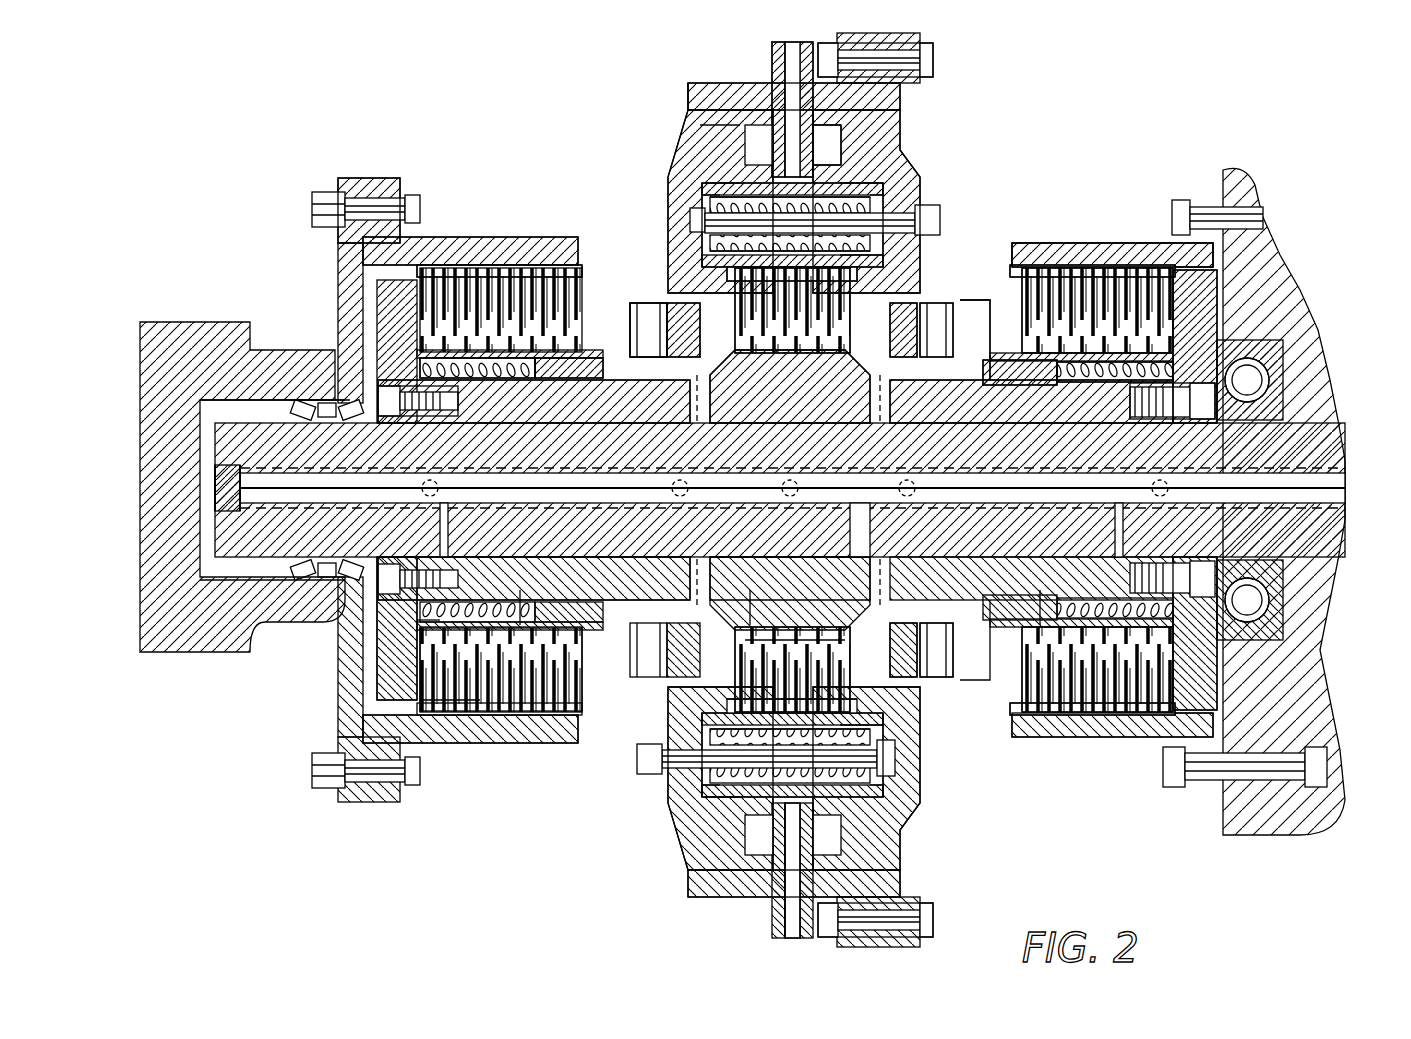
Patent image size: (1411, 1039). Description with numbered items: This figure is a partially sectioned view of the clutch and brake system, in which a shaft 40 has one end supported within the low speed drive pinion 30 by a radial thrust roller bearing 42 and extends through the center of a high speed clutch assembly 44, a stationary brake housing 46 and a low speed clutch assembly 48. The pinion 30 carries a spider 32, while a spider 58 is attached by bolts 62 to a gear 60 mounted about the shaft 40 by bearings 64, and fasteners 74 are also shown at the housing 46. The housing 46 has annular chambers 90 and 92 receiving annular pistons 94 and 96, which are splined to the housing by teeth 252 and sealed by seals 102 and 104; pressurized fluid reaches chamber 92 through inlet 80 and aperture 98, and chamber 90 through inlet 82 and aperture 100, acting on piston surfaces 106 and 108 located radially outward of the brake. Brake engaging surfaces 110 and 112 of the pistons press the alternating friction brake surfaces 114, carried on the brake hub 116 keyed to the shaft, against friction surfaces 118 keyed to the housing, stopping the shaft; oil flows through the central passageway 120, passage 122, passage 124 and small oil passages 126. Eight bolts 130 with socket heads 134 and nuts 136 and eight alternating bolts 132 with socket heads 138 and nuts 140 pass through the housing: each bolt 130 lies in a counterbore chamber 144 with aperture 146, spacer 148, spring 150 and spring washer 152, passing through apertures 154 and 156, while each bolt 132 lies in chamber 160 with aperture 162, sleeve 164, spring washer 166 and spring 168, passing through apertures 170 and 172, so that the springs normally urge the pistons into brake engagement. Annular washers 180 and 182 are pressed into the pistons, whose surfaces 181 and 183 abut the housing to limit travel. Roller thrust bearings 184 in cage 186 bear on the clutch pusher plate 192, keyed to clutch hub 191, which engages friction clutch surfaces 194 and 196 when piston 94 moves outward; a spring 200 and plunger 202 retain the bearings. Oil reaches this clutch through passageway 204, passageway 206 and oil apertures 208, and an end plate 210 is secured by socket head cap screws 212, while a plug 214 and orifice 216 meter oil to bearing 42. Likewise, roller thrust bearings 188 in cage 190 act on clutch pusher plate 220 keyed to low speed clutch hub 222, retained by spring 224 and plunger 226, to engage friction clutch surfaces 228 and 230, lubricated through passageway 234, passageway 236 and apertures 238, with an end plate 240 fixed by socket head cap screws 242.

The low speed drive pinion 30 is at (235, 325).
The spider 32 is at (545, 240).
The shaft 40 is at (312, 460).
The radial thrust roller bearing 42 is at (322, 400).
The high speed clutch assembly 44 is at (488, 175).
The brake housing 46 is at (692, 95).
The low speed clutch assembly 48 is at (1108, 194).
The spider 58 is at (1105, 243).
The gear 60 is at (1310, 320).
The bolts 62 is at (1208, 212).
The bearings 64 is at (1270, 382).
The bolt 74 is at (905, 60).
The inlet 80 is at (772, 58).
The inlet 82 is at (772, 935).
The annular chamber 90 is at (712, 105).
The annular chamber 92 is at (815, 125).
The annular piston 94 is at (690, 150).
The annular piston 96 is at (895, 150).
The aperture 98 is at (785, 100).
The aperture 100 is at (768, 895).
The seal 102 is at (755, 100).
The seal 104 is at (860, 118).
The piston surface 106 is at (705, 130).
The piston surface 108 is at (880, 130).
The brake engaging surface 110 is at (745, 290).
The brake engaging surface 112 is at (848, 290).
The friction brake surfaces 114 is at (820, 650).
The brake hub 116 is at (818, 394).
The friction surfaces 118 is at (885, 740).
The passageway 120 is at (1345, 487).
The passage 122 is at (870, 530).
The passage 124 is at (838, 588).
The oil passages 126 is at (774, 588).
The bolts 130 is at (712, 207).
The bolts 132 is at (660, 760).
The socket head 134 is at (700, 223).
The nuts 136 is at (940, 218).
The socket head 138 is at (895, 762).
The nuts 140 is at (662, 762).
The circular chamber 144 is at (705, 186).
The aperture 146 is at (885, 188).
The spacer 148 is at (880, 245).
The spring 150 is at (890, 180).
The spring washer 152 is at (712, 243).
The aperture 154 is at (885, 200).
The aperture 156 is at (702, 200).
The chamber 160 is at (880, 785).
The aperture 162 is at (712, 775).
The sleeve 164 is at (705, 790).
The spring washer 166 is at (885, 750).
The spring 168 is at (708, 798).
The aperture 170 is at (885, 722).
The aperture 172 is at (650, 744).
The annular washer 180 is at (668, 283).
The surface 181 is at (640, 196).
The annular washer 182 is at (905, 303).
The surface 183 is at (925, 193).
The roller thrust bearings 184 is at (640, 325).
The annular cage 186 is at (675, 303).
The roller thrust bearings 188 is at (940, 325).
The cage 190 is at (985, 310).
The clutch hub 191 is at (650, 408).
The clutch pusher plate 192 is at (565, 277).
The friction clutch surfaces 194 is at (420, 650).
The friction clutch surfaces 196 is at (445, 710).
The spring 200 is at (485, 372).
The plunger 202 is at (565, 375).
The passageway 204 is at (460, 545).
The passageway 206 is at (472, 586).
The oil apertures 208 is at (549, 586).
The end plate 210 is at (385, 640).
The socket head cap screws 212 is at (440, 408).
The plug 214 is at (245, 512).
The orifice 216 is at (215, 485).
The clutch pusher plate 220 is at (1010, 273).
The low speed clutch hub 222 is at (962, 406).
The spring 224 is at (1100, 375).
The plunger 226 is at (1015, 380).
The friction clutch surfaces 228 is at (1185, 335).
The friction clutch surfaces 230 is at (1112, 275).
The passageway 234 is at (1145, 540).
The passageway 236 is at (1130, 588).
The apertures 238 is at (1062, 588).
The end plate 240 is at (1195, 660).
The socket head cap screws 242 is at (1160, 410).
The teeth 252 is at (848, 702).